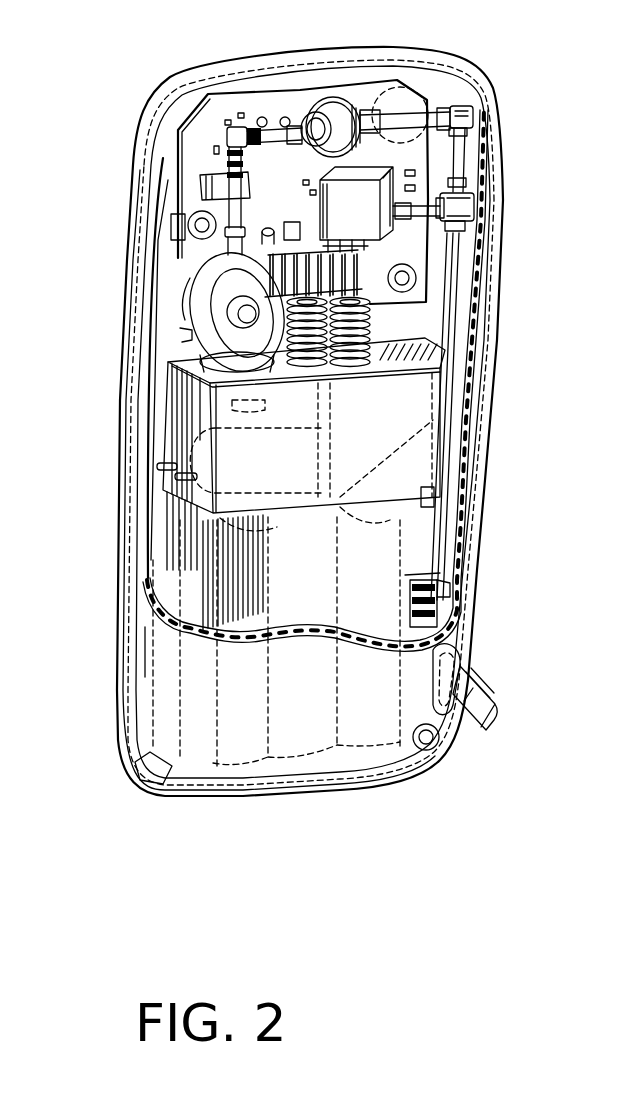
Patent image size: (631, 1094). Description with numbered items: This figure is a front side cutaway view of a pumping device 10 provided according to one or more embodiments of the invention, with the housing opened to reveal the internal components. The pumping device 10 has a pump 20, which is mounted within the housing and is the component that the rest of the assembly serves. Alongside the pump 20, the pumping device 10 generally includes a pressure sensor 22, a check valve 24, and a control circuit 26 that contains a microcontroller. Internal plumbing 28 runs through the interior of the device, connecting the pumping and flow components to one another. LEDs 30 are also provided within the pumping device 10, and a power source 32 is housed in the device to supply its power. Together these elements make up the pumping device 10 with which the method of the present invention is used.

The pumping device 10 is at (545, 114).
The pump 20 is at (288, 478).
The pressure sensor 22 is at (374, 221).
The check valve 24 is at (348, 98).
The control circuit 26 is at (378, 90).
The internal plumbing 28 is at (237, 128).
The LEDs 30 is at (262, 184).
The power source 32 is at (368, 578).